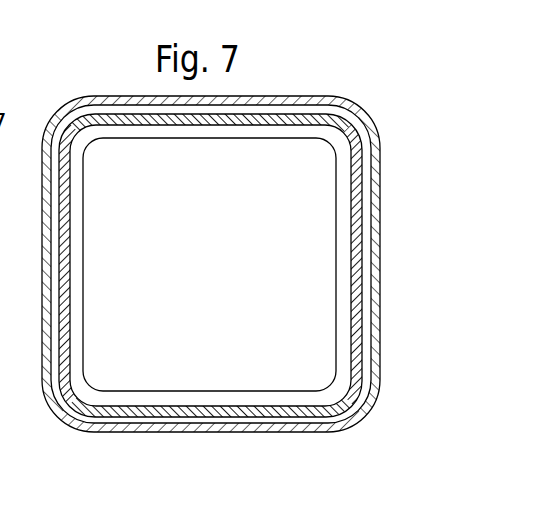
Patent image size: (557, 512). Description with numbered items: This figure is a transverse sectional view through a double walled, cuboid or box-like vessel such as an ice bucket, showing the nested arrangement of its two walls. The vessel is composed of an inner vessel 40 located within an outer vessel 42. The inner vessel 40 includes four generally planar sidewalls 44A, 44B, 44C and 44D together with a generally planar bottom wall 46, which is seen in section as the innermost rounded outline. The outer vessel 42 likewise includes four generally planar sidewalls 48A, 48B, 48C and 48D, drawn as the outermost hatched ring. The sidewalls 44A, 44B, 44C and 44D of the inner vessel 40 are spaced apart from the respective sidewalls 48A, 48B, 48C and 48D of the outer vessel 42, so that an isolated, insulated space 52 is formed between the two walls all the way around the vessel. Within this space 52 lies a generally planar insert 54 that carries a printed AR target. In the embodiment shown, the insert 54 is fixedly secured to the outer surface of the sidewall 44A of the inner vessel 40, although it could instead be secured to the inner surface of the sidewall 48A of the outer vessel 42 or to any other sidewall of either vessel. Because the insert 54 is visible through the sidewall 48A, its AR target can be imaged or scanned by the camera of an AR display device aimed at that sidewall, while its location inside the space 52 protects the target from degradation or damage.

The inner vessel 40 is at (328, 105).
The outer vessel 42 is at (348, 102).
The sidewall 44A is at (218, 410).
The sidewall 44B is at (68, 300).
The sidewall 44C is at (199, 125).
The sidewall 44D is at (352, 233).
The bottom wall 46 is at (290, 288).
The sidewall 48A is at (167, 430).
The sidewall 48B is at (42, 277).
The sidewall 48C is at (117, 97).
The sidewall 48D is at (377, 185).
The insulated space 52 is at (73, 118).
The insert 54 is at (130, 418).